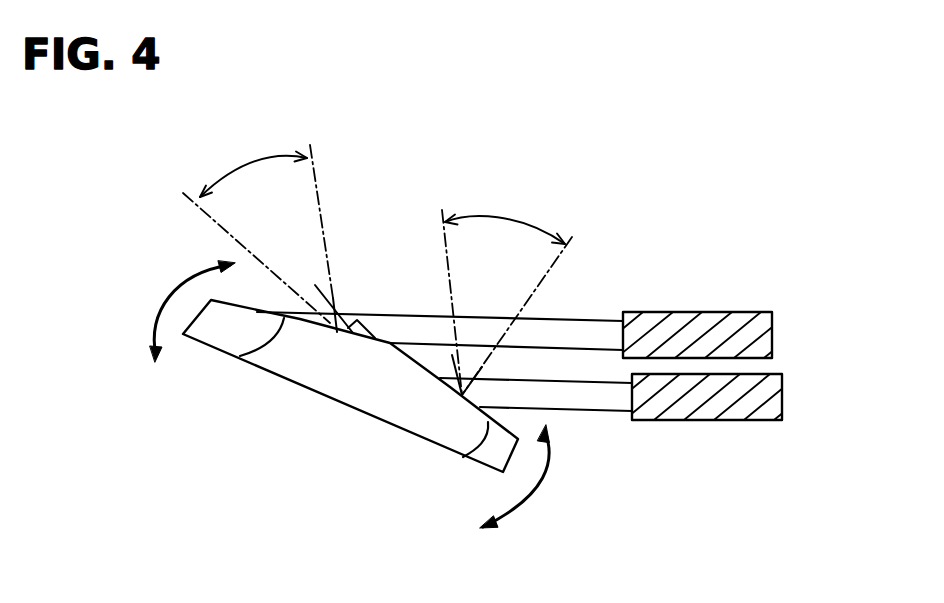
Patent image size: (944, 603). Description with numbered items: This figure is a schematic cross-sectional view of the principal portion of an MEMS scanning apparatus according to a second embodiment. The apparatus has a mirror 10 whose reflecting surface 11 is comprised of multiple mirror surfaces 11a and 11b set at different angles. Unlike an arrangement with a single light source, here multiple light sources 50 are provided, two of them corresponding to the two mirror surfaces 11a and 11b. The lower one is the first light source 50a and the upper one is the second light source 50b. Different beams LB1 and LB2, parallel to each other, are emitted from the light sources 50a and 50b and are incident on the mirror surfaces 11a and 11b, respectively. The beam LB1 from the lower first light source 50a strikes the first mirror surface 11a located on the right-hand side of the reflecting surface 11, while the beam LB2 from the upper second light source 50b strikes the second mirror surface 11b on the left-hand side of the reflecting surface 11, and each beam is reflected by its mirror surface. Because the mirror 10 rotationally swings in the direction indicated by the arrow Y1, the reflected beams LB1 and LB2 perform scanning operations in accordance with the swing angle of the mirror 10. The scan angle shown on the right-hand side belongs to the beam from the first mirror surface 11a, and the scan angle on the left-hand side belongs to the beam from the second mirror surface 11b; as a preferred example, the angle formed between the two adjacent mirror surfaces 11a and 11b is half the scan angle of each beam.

The mirror 10 is at (294, 375).
The reflecting surface 11 is at (258, 311).
The first mirror surface 11a is at (463, 457).
The second mirror surface 11b is at (240, 356).
The light source 50 is at (701, 323).
The first light source 50a is at (705, 258).
The second light source 50b is at (730, 326).
The beam LB1 is at (600, 405).
The beam LB2 is at (597, 325).
The arrow Y1 is at (353, 394).